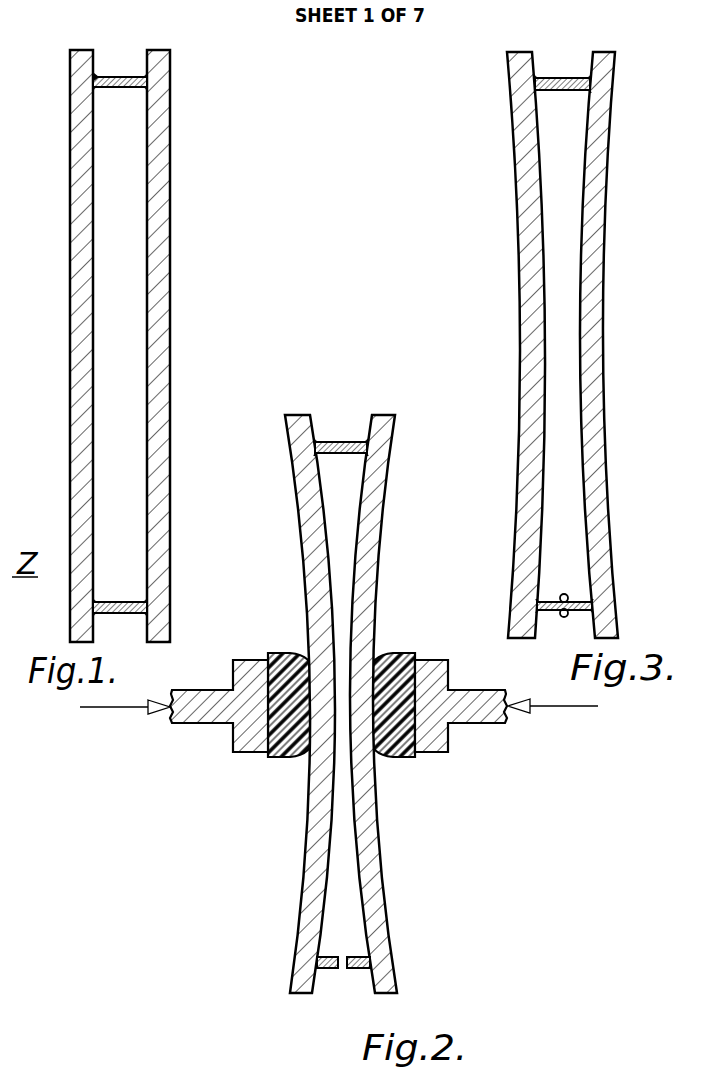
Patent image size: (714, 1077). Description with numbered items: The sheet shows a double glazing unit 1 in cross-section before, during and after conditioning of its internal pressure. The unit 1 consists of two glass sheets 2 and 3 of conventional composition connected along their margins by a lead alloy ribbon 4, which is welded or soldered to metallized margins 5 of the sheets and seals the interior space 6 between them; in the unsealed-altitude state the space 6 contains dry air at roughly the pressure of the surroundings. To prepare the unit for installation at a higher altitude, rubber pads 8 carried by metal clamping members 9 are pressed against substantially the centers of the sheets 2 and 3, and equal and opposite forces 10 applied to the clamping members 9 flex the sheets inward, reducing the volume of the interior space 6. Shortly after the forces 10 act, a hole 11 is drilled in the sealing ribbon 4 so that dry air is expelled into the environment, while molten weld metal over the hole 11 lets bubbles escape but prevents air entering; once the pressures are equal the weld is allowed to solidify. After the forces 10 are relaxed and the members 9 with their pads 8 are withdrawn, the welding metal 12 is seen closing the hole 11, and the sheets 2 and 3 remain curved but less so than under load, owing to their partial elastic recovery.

In FIG. 1, the double glazing unit 1 is at (122, 327).
In FIG. 1, the glass sheet 2 is at (153, 293).
In FIG. 2, the glass sheet 2 is at (367, 525).
In FIG. 3, the glass sheet 2 is at (588, 289).
In FIG. 1, the glass sheet 3 is at (82, 291).
In FIG. 2, the glass sheet 3 is at (318, 533).
In FIG. 3, the glass sheet 3 is at (530, 285).
In FIG. 1, the lead alloy ribbon 4 is at (122, 80).
In FIG. 1, the metallized margins 5 is at (94, 74).
In FIG. 1, the interior space 6 is at (115, 448).
In FIG. 2, the interior space 6 is at (343, 910).
In FIG. 2, the rubber pads 8 is at (297, 688).
In FIG. 2, the metal clamping members 9 is at (247, 750).
In FIG. 2, the forces 10 is at (125, 708).
In FIG. 2, the hole 11 is at (342, 968).
In FIG. 3, the welding metal 12 is at (563, 616).